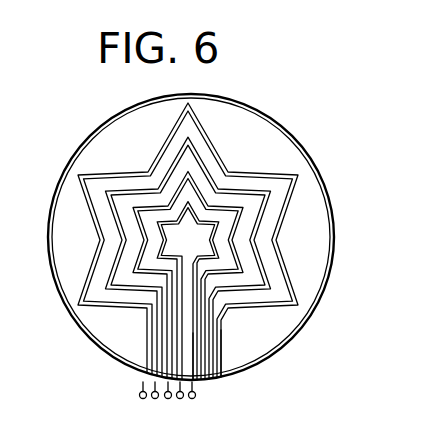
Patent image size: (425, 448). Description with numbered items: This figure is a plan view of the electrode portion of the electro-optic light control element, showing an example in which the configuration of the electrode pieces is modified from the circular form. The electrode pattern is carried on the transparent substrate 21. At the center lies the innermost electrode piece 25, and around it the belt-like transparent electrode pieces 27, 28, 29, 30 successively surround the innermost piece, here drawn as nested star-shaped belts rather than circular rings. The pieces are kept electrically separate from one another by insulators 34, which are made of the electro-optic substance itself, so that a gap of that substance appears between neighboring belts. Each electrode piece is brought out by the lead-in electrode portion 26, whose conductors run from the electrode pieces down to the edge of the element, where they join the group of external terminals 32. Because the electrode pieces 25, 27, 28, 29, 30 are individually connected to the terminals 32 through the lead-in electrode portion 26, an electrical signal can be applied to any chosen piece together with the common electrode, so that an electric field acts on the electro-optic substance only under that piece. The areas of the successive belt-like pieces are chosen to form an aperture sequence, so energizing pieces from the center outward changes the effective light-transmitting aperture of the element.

The transparent substrate 21 is at (279, 125).
The transparent electrode piece 30 is at (50, 227).
The insulator 34 is at (301, 187).
The transparent electrode piece 28 is at (253, 263).
The transparent electrode piece 27 is at (230, 224).
The innermost electrode piece 25 is at (175, 247).
The lead-in electrode portion 26 is at (194, 333).
The transparent electrode piece 29 is at (278, 293).
The external terminals 32 is at (204, 402).